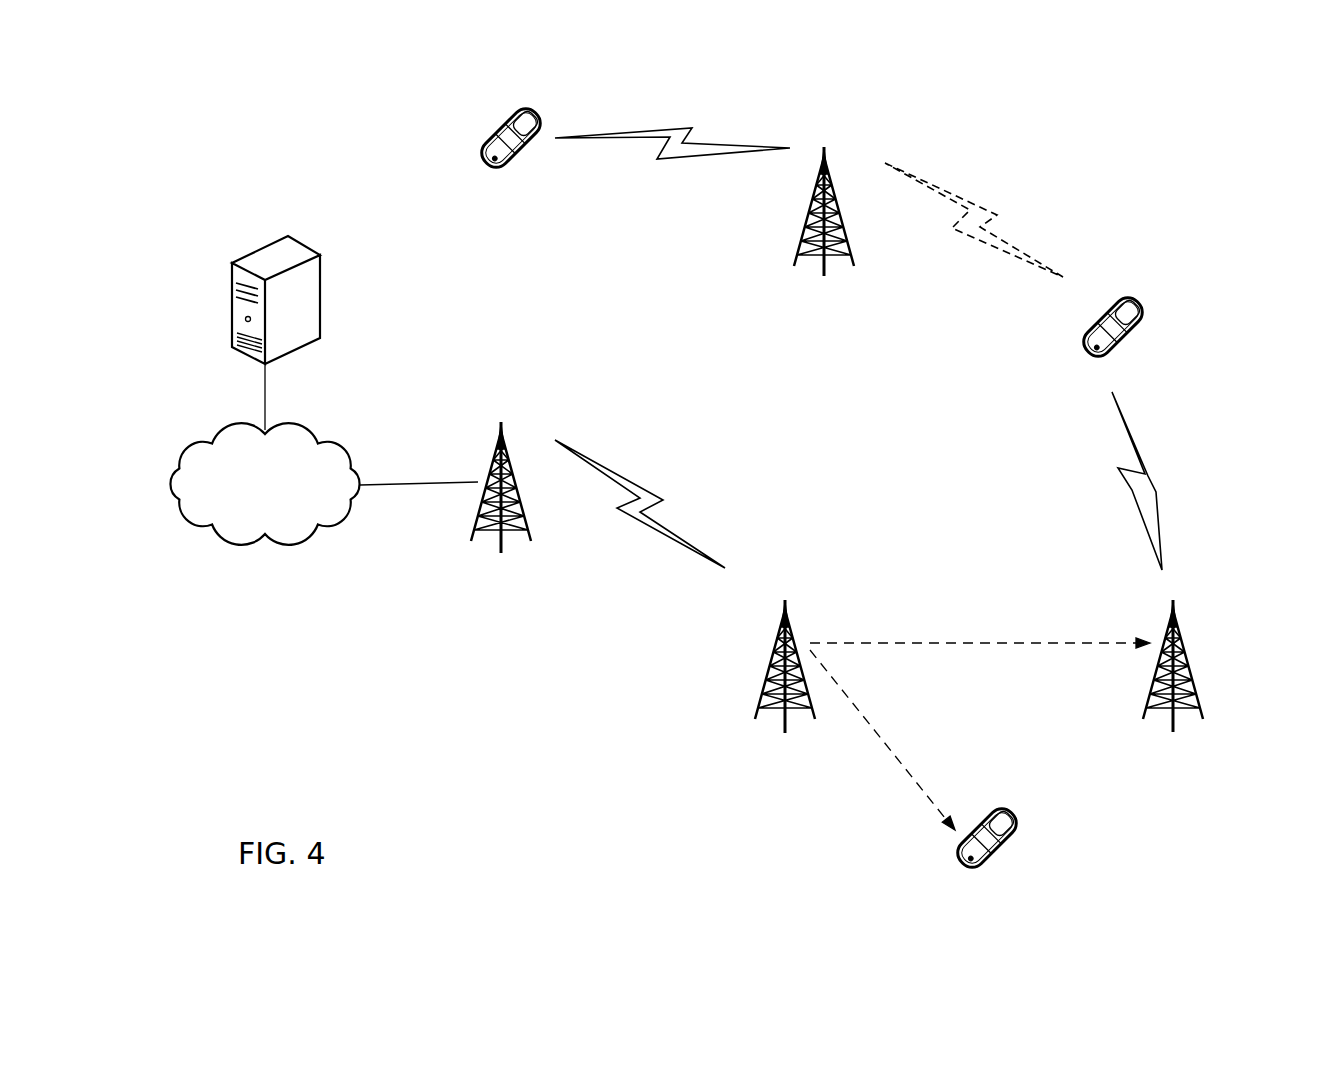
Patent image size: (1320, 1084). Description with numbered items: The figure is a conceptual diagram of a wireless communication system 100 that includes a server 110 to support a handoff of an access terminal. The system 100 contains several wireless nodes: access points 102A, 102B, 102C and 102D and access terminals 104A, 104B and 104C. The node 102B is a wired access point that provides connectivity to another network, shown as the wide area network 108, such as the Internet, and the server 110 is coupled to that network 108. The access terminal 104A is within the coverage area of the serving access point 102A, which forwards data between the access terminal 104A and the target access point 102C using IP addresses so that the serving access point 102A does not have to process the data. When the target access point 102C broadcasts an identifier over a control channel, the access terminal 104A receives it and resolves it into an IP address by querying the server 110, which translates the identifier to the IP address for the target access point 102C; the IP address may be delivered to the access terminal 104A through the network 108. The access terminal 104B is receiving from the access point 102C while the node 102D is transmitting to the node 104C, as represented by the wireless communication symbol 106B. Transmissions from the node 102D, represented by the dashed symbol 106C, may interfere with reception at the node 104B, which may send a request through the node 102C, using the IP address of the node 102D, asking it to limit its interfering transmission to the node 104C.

The wireless communication system 100 is at (1158, 127).
The access point 102A is at (768, 666).
The wired access point 102B is at (488, 487).
The target access point 102C is at (1194, 666).
The access point 102D is at (808, 226).
The access terminal 104A is at (1004, 850).
The access terminal 104B is at (1089, 326).
The access terminal 104C is at (489, 138).
The wireless communication symbol 106B is at (672, 125).
The dashed symbol 106C is at (974, 220).
The wide area network 108 is at (324, 484).
The server 110 is at (260, 333).